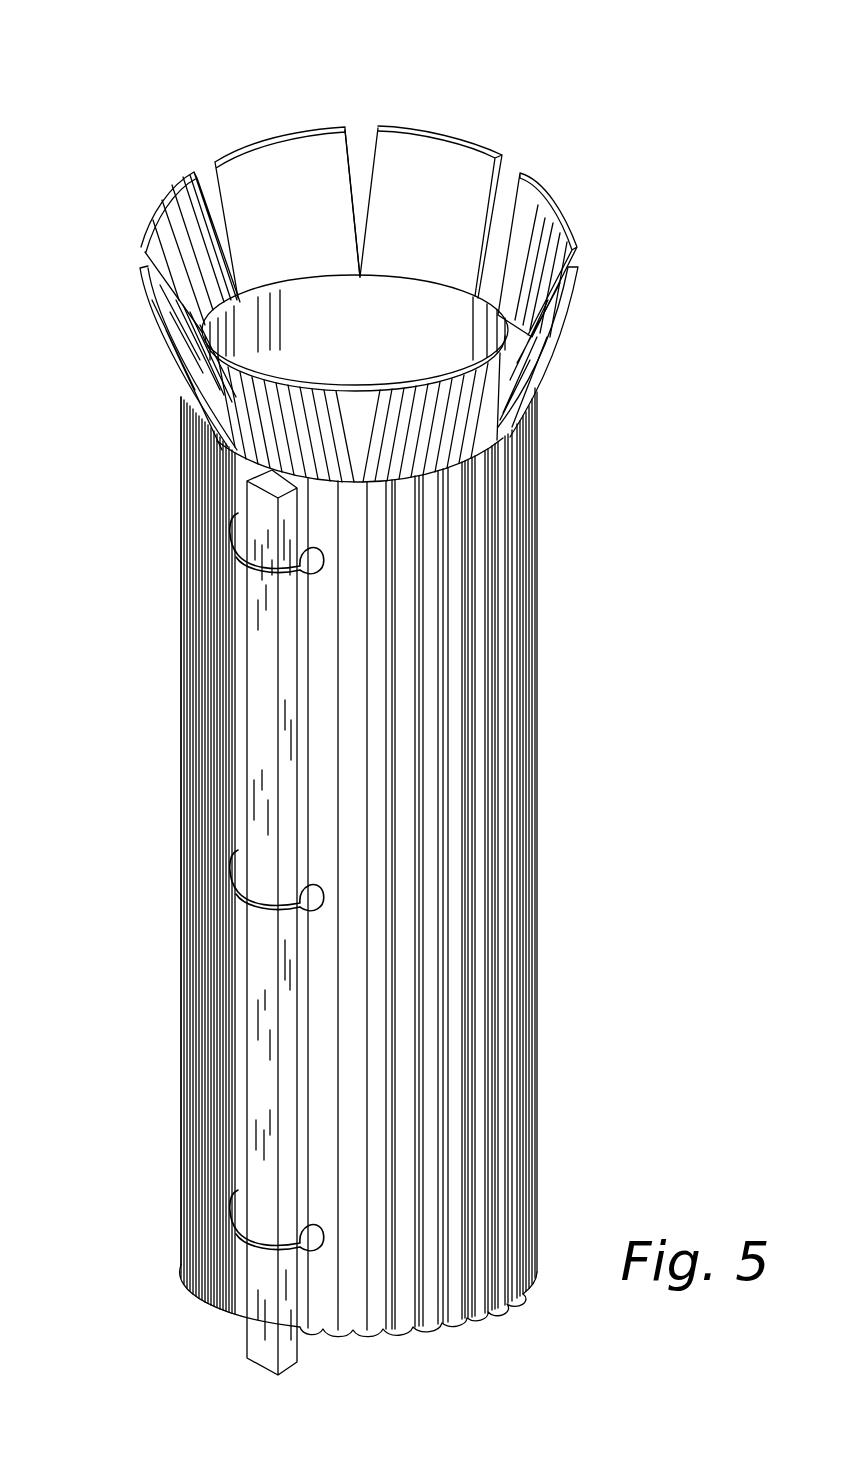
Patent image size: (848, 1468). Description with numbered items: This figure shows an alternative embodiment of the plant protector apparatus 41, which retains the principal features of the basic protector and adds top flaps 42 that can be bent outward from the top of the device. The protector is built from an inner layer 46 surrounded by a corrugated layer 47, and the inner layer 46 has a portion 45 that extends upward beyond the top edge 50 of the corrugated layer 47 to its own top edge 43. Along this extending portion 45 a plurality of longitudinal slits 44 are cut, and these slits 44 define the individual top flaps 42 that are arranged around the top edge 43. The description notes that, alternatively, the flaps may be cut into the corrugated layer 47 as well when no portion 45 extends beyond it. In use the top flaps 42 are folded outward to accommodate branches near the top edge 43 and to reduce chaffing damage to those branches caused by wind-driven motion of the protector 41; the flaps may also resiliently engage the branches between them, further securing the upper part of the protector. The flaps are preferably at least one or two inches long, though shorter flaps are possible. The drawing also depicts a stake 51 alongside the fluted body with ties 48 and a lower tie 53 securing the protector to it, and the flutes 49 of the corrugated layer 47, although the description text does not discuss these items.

The plant protector apparatus 41 is at (608, 485).
The top flaps 42 is at (570, 213).
The top edge 43 is at (262, 138).
The longitudinal slits 44 is at (350, 157).
The portion 45 is at (167, 350).
The inner layer 46 is at (472, 185).
The corrugated layer 47 is at (180, 447).
The tie 48 is at (328, 902).
The flutes 49 is at (537, 713).
The top edge 50 is at (520, 425).
The stake 51 is at (265, 1278).
The tie 53 is at (240, 1230).